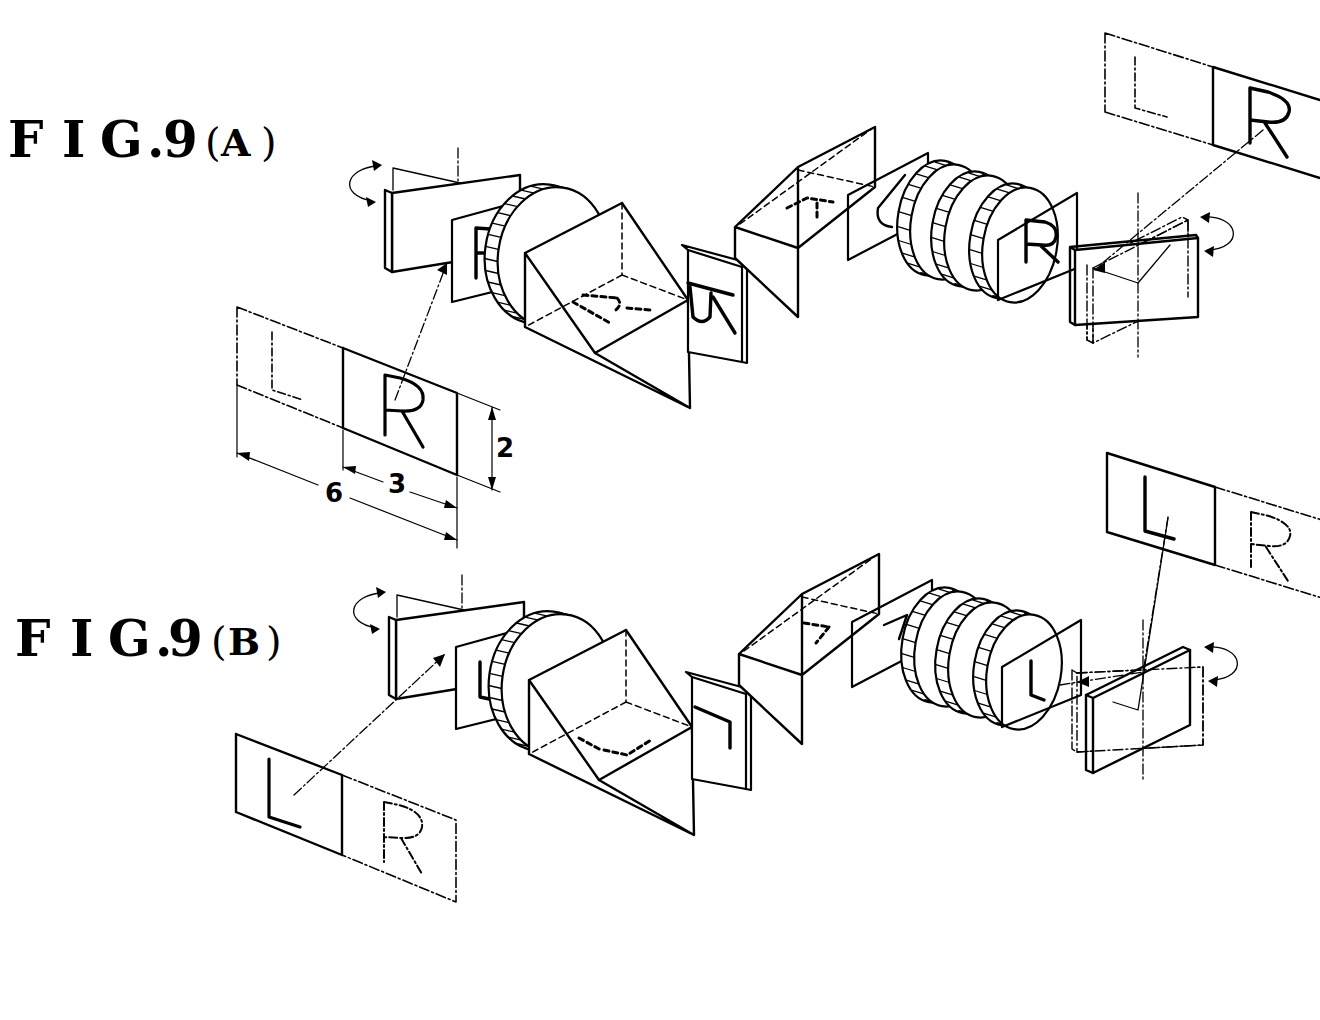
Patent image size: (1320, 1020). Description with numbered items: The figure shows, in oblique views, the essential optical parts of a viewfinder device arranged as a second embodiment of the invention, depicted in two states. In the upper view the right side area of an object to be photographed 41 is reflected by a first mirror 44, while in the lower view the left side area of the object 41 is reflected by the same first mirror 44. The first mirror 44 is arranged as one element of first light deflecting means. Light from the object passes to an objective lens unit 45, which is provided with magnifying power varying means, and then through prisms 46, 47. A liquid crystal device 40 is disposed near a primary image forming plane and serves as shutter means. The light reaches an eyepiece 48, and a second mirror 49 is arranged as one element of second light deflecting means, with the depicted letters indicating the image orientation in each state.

In FIG. 9A, the liquid crystal device 40 is at (720, 352).
In FIG. 9B, the liquid crystal device 40 is at (721, 759).
In FIG. 9A, the object to be photographed 41 is at (1305, 110).
In FIG. 9B, the object to be photographed 41 is at (1213, 565).
In FIG. 9A, the first mirror 44 is at (1190, 305).
In FIG. 9B, the first mirror 44 is at (1148, 677).
In FIG. 9A, the objective lens unit 45 is at (942, 156).
In FIG. 9B, the objective lens unit 45 is at (981, 637).
In FIG. 9A, the prism 46 is at (822, 160).
In FIG. 9B, the prism 46 is at (809, 665).
In FIG. 9A, the prism 47 is at (633, 242).
In FIG. 9B, the prism 47 is at (611, 758).
In FIG. 9A, the eyepiece 48 is at (565, 200).
In FIG. 9B, the eyepiece 48 is at (550, 652).
In FIG. 9A, the second mirror 49 is at (487, 210).
In FIG. 9B, the second mirror 49 is at (467, 702).